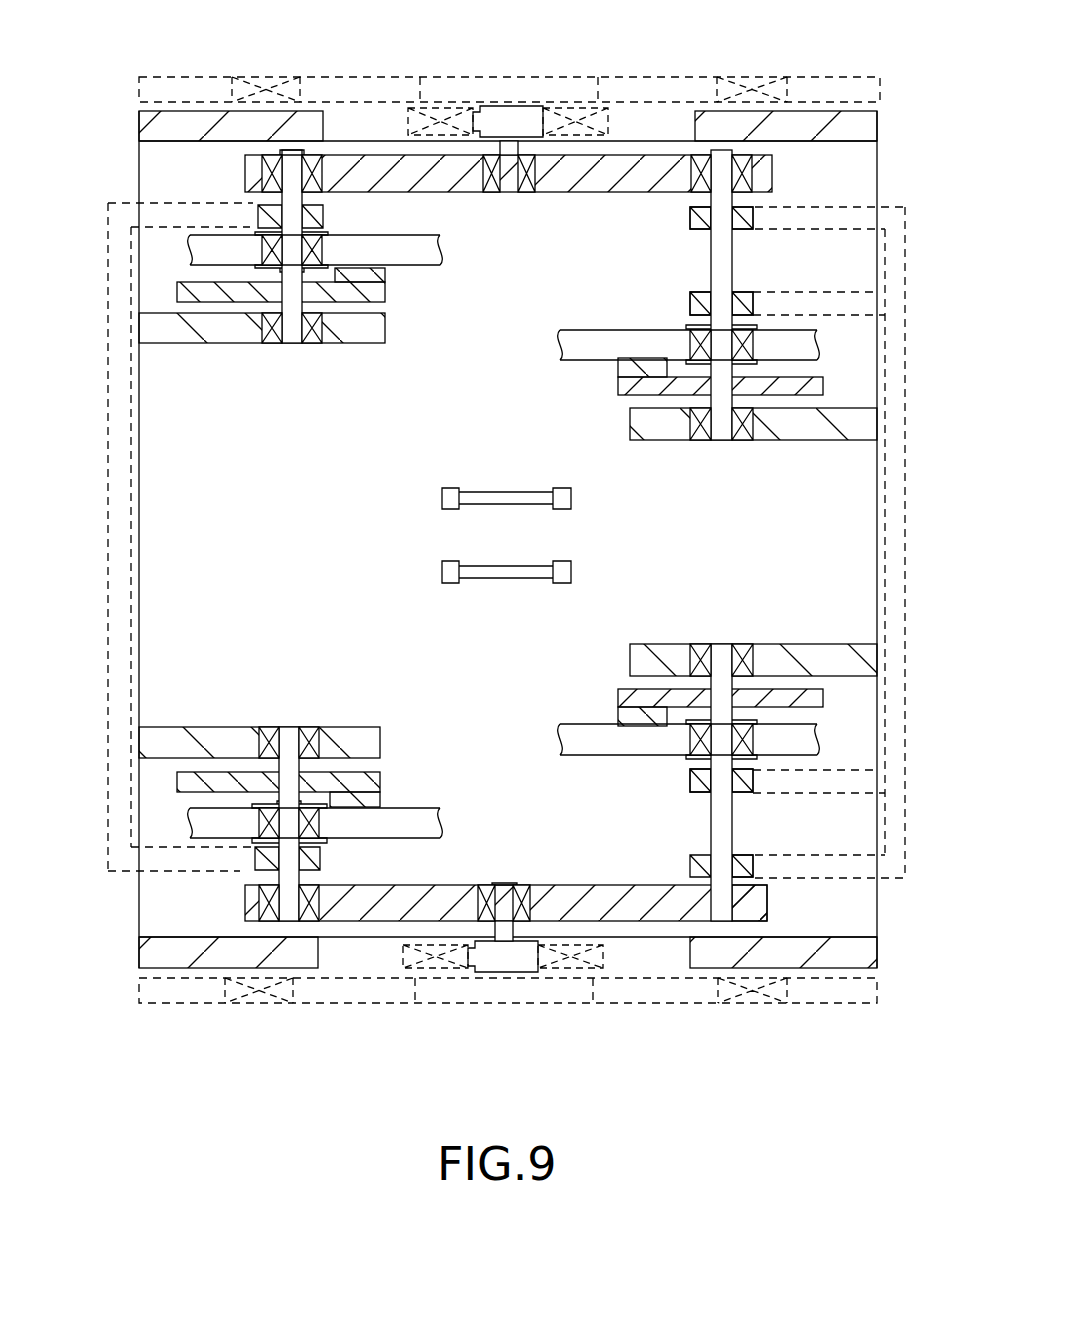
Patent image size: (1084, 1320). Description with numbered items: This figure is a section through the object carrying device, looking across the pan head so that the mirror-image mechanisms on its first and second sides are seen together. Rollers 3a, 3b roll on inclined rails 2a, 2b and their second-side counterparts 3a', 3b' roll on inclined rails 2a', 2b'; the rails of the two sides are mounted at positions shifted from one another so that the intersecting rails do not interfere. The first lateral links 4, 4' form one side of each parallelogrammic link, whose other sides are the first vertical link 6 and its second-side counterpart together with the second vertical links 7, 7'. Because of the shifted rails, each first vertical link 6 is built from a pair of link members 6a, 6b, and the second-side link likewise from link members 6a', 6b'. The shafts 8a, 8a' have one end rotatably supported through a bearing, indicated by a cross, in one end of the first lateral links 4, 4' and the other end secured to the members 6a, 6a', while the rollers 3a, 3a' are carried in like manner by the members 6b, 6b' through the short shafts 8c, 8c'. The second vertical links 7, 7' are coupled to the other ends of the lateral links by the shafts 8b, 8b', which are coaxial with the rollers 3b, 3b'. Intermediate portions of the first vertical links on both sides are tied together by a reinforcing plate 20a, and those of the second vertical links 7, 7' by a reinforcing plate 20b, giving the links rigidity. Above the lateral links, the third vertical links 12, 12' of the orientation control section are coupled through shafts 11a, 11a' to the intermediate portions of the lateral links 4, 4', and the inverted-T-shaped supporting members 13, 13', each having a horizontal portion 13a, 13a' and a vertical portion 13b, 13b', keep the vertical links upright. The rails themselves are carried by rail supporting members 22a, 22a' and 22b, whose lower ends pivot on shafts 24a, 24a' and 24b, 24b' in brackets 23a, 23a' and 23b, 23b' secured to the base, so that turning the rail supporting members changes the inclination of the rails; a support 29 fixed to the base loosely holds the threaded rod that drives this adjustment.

The inclined rail 2a is at (664, 738).
The inclined rail 2a' is at (663, 342).
The inclined rail 2b is at (346, 823).
The inclined rail 2b' is at (349, 251).
The roller 3a is at (698, 763).
The roller 3a' is at (696, 323).
The roller 3b is at (232, 811).
The roller 3b' is at (234, 251).
The first lateral link 4 is at (506, 879).
The first lateral link 4' is at (508, 204).
The first vertical link 6 is at (691, 220).
The link member 6a is at (758, 852).
The link member 6a' is at (775, 198).
The link member 6b is at (759, 798).
The link member 6b' is at (777, 284).
The second vertical link 7 is at (262, 875).
The second vertical link 7' is at (271, 220).
The shaft 8a is at (767, 900).
The shaft 8a' is at (703, 242).
The shaft 8b is at (319, 845).
The shaft 8b' is at (315, 215).
The shaft 8c is at (710, 806).
The shaft 8c' is at (730, 281).
The shaft 11a is at (515, 887).
The shaft 11a' is at (519, 191).
The third vertical link 12 is at (503, 994).
The third vertical link 12' is at (508, 83).
The supporting member 13 is at (508, 1019).
The supporting member 13' is at (509, 61).
The horizontal portion 13a is at (712, 1019).
The horizontal portion 13a' is at (708, 61).
The vertical portion 13b is at (385, 1019).
The vertical portion 13b' is at (385, 55).
The reinforcing plate 20a is at (880, 550).
The reinforcing plate 20b is at (133, 563).
The rail supporting member 22a is at (679, 701).
The rail supporting member 22a' is at (682, 377).
The rail supporting member 22b is at (385, 288).
The bracket 23a is at (753, 637).
The bracket 23a' is at (753, 450).
The bracket 23b is at (259, 721).
The bracket 23b' is at (262, 354).
The shaft 24a is at (707, 760).
The shaft 24a' is at (705, 321).
The shaft 24b is at (290, 802).
The shaft 24b' is at (293, 273).
The support 29 is at (473, 591).